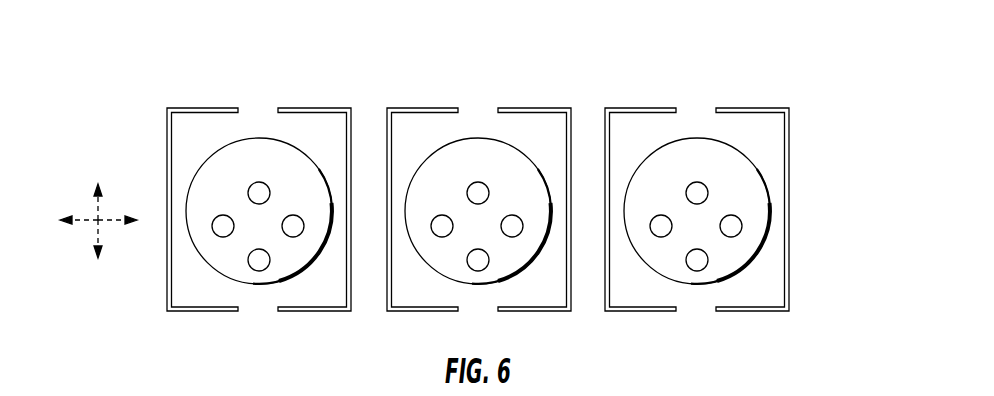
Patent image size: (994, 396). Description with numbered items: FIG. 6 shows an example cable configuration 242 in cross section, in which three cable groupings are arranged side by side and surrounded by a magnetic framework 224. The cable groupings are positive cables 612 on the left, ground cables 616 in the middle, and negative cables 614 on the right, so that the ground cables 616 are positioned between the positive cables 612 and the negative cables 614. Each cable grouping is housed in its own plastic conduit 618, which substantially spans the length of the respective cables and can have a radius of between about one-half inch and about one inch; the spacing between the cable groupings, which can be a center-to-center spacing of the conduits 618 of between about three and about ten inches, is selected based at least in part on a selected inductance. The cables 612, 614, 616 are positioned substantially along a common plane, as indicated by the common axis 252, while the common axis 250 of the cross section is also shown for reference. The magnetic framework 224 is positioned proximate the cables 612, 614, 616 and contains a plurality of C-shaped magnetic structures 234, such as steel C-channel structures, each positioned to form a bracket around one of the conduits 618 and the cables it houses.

The magnetic framework 224 is at (655, 66).
The C-shaped magnetic structure 234 is at (303, 107).
The cable configuration 242 is at (771, 83).
The common axis 250 is at (93, 208).
The common axis 252 is at (105, 225).
The positive cables 612 is at (276, 238).
The negative cables 614 is at (714, 238).
The ground cables 616 is at (495, 238).
The plastic conduit 618 is at (265, 137).